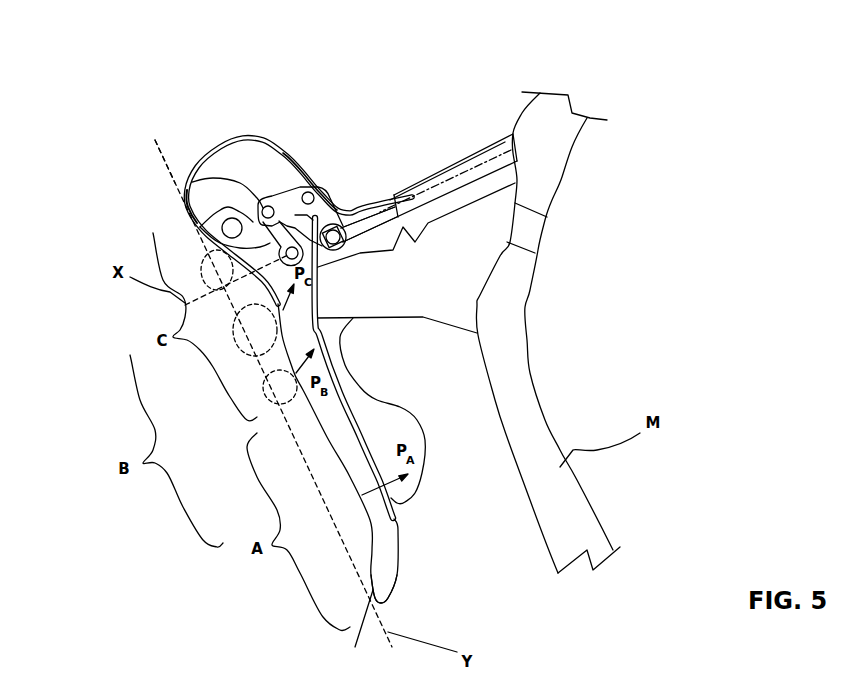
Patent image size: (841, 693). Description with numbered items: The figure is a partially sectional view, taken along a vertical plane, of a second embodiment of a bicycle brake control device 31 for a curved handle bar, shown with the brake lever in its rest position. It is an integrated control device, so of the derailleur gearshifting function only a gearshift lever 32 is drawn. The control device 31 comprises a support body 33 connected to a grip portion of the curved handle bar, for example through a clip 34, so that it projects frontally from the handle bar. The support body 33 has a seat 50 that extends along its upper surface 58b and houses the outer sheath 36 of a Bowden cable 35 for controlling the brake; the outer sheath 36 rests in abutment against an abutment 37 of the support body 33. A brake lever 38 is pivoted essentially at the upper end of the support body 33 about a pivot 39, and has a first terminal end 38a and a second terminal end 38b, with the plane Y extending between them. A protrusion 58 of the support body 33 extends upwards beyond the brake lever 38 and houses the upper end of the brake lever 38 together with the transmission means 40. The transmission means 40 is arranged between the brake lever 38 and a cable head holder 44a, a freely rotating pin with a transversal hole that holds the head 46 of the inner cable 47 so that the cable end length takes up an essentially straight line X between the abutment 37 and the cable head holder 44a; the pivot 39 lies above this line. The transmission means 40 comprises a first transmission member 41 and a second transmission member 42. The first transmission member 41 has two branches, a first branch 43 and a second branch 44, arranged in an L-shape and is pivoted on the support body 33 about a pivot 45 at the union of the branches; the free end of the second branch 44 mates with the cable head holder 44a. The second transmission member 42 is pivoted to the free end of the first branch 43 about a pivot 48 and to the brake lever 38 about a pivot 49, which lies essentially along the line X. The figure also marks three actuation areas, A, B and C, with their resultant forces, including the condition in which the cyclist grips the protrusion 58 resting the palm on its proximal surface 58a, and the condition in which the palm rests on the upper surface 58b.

The brake control device 31 is at (147, 134).
The gearshift lever 32 is at (413, 490).
The support body 33 is at (452, 312).
The clip 34 is at (530, 237).
The Bowden cable 35 is at (523, 180).
The outer sheath 36 is at (488, 140).
The abutment 37 is at (388, 206).
The brake lever 38 is at (390, 580).
The first terminal end 38a is at (356, 629).
The second terminal end 38b is at (213, 212).
The pivot 39 is at (190, 218).
The transmission means 40 is at (190, 186).
The first transmission member 41 is at (275, 180).
The second transmission member 42 is at (210, 244).
The first branch 43 is at (285, 200).
The second branch 44 is at (330, 210).
The cable head holder 44a is at (335, 251).
The pivot 45 is at (311, 196).
The head 46 is at (350, 253).
The inner cable 47 is at (370, 223).
The pivot 48 is at (252, 195).
The pivot 49 is at (262, 285).
The seat 50 is at (450, 178).
The protrusion 58 is at (213, 147).
The proximal surface 58a is at (306, 158).
The upper surface 58b is at (415, 175).